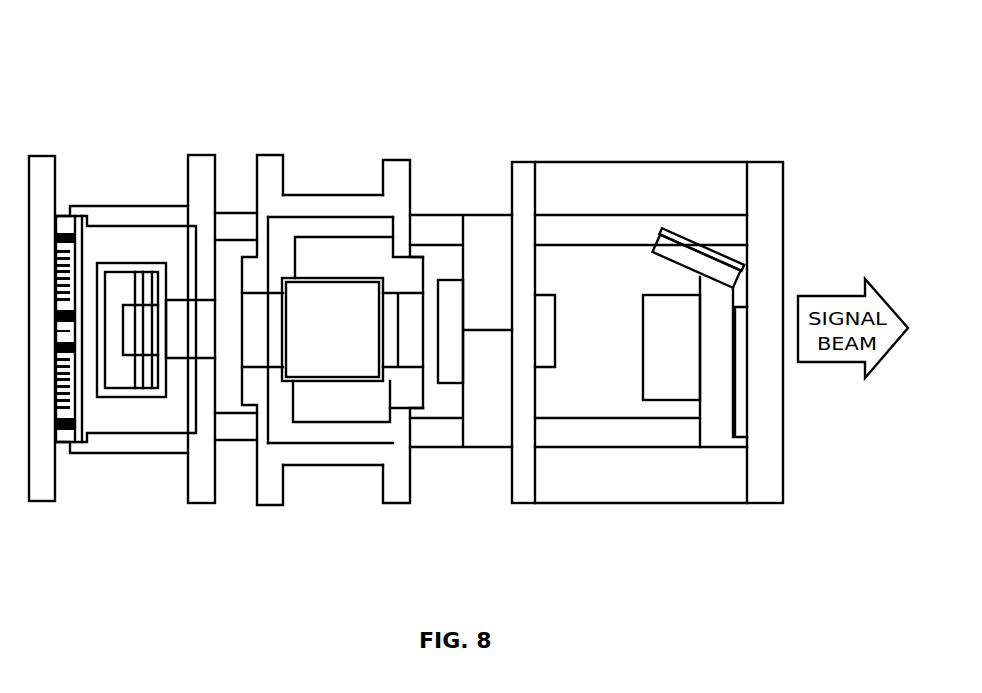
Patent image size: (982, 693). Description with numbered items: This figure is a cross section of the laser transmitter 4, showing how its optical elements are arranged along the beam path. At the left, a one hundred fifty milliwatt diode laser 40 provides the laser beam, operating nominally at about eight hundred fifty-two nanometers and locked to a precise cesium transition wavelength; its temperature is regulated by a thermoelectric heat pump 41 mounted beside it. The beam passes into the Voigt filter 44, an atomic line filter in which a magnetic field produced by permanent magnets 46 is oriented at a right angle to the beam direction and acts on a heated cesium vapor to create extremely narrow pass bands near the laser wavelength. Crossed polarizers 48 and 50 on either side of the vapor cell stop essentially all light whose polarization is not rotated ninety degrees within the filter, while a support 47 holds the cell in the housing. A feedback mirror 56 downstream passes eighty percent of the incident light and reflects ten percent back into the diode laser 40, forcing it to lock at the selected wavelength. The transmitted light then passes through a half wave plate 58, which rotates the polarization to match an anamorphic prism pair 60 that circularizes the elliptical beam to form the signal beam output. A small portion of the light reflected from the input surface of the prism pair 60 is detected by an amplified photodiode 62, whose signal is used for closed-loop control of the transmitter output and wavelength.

The transmitter 4 is at (531, 79).
The diode laser 40 is at (148, 394).
The thermoelectric heat pump 41 is at (60, 238).
The Voigt filter 44 is at (218, 518).
The permanent magnets 46 is at (322, 195).
The cube support 47 is at (322, 381).
The crossed polarizer 48 is at (248, 293).
The crossed polarizer 50 is at (402, 293).
The feedback mirror 56 is at (438, 281).
The half wave plate 58 is at (536, 296).
The anamorphic prism pair 60 is at (672, 399).
The amplified photodiode 62 is at (686, 243).